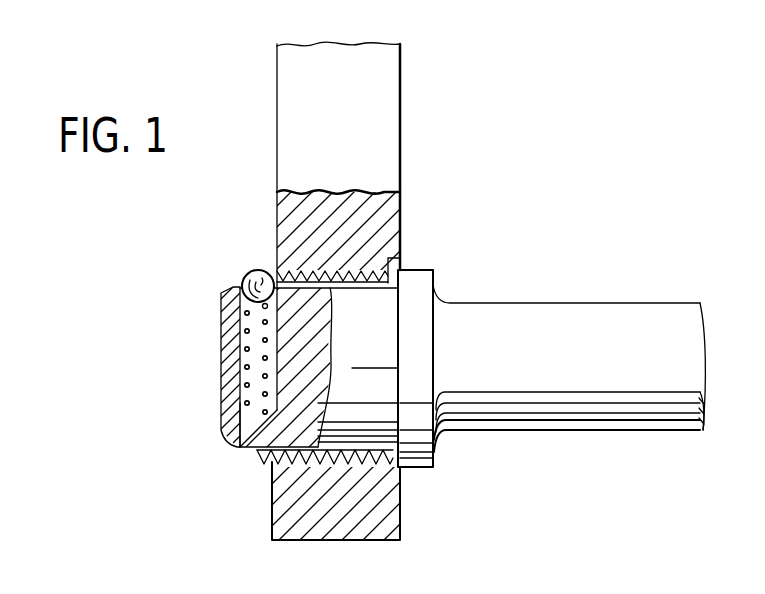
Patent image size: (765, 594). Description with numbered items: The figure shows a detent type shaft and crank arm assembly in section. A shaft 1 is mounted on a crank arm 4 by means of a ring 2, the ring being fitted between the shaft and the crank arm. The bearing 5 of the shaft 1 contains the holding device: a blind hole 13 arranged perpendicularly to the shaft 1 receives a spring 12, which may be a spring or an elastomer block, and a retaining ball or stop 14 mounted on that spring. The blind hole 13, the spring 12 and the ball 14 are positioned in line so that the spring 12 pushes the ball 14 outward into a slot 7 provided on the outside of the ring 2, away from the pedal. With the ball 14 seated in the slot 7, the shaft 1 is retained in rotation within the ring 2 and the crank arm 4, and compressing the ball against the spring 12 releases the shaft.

The shaft 1 is at (556, 403).
The ring 2 is at (345, 470).
The crank arm 4 is at (365, 150).
The bearing 5 is at (240, 447).
The slot 7 is at (287, 270).
The spring 12 is at (222, 330).
The blind hole 13 is at (243, 373).
The retaining ball 14 is at (248, 274).